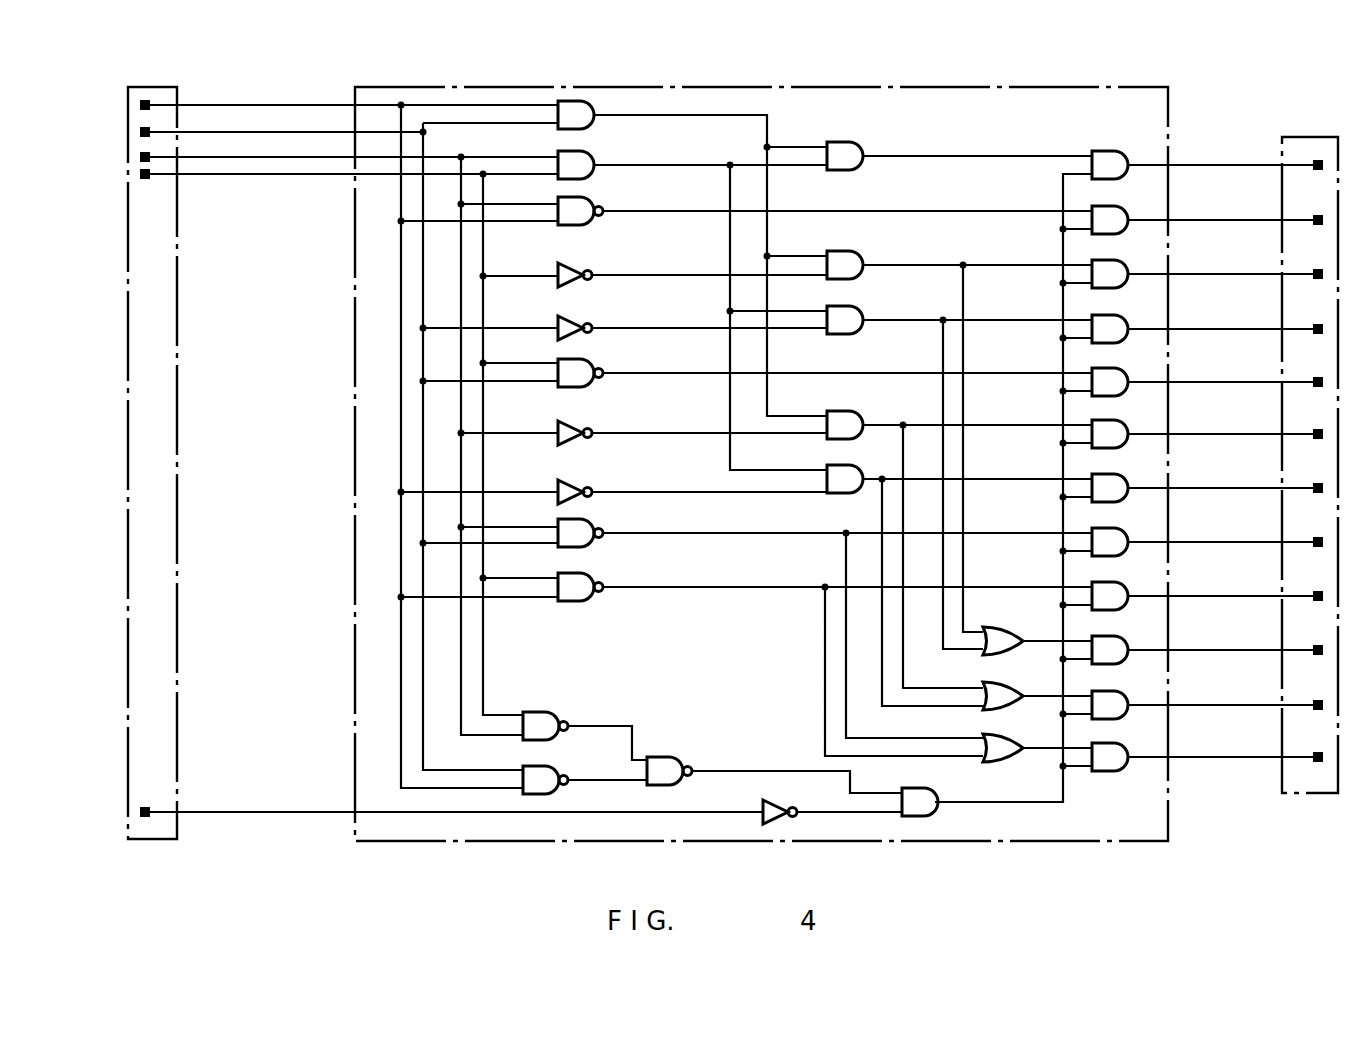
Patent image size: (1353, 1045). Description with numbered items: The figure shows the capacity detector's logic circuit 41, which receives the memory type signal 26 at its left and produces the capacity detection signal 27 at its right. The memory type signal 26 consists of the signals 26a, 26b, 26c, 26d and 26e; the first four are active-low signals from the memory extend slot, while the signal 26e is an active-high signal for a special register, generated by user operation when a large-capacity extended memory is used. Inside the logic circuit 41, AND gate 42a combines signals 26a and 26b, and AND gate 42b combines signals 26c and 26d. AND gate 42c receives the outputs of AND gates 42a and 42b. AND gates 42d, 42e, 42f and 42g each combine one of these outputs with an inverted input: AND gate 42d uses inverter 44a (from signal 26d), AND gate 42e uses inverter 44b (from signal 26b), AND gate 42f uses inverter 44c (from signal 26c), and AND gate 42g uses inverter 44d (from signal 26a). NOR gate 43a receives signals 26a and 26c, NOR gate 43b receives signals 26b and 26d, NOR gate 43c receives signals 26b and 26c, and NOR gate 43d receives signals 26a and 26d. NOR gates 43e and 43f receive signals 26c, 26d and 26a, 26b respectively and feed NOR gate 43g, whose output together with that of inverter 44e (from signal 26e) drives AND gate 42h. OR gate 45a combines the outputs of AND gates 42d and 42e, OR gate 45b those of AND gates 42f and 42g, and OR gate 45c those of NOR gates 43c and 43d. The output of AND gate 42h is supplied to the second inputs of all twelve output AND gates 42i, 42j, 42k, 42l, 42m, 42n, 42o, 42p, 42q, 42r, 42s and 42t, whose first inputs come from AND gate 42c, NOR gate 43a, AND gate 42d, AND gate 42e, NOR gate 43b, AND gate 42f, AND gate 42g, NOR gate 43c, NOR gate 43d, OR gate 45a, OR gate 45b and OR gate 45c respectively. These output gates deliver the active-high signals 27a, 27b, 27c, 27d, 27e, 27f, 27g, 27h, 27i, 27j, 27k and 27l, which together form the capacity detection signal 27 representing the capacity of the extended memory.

The memory type signal 26 is at (166, 840).
The signal 26a is at (140, 105).
The signal 26b is at (140, 132).
The signal 26c is at (140, 157).
The signal 26d is at (140, 174).
The signal 26e is at (140, 812).
The capacity detection signal 27 is at (1297, 795).
The signal 27a is at (1316, 159).
The signal 27b is at (1316, 214).
The signal 27c is at (1316, 268).
The signal 27d is at (1316, 323).
The signal 27e is at (1316, 376).
The signal 27f is at (1316, 428).
The signal 27g is at (1316, 482).
The signal 27h is at (1316, 536).
The signal 27i is at (1316, 590).
The signal 27j is at (1316, 644).
The signal 27k is at (1316, 699).
The signal 27l is at (1316, 751).
The logic circuit 41 is at (1096, 842).
The AND gate 42a is at (588, 106).
The AND gate 42b is at (588, 155).
The AND gate 42c is at (856, 146).
The AND gate 42d is at (856, 255).
The AND gate 42e is at (856, 310).
The AND gate 42f is at (856, 415).
The AND gate 42g is at (856, 469).
The AND gate 42h is at (932, 814).
The AND gate 42i is at (1127, 142).
The AND gate 42j is at (1127, 202).
The AND gate 42k is at (1127, 259).
The AND gate 42l is at (1127, 315).
The AND gate 42m is at (1127, 369).
The AND gate 42n is at (1127, 420).
The AND gate 42o is at (1127, 475).
The AND gate 42p is at (1127, 526).
The AND gate 42q is at (1127, 579).
The AND gate 42r is at (1127, 637).
The AND gate 42s is at (1127, 692).
The AND gate 42t is at (1127, 744).
The NOR gate 43a is at (588, 201).
The NOR gate 43b is at (588, 363).
The NOR gate 43c is at (588, 523).
The NOR gate 43d is at (588, 577).
The NOR gate 43e is at (553, 716).
The NOR gate 43f is at (553, 770).
The NOR gate 43g is at (670, 758).
The inverter 44a is at (575, 266).
The inverter 44b is at (575, 319).
The inverter 44c is at (575, 424).
The inverter 44d is at (575, 483).
The inverter 44e is at (776, 803).
The OR gate 45a is at (1013, 629).
The OR gate 45b is at (1013, 684).
The OR gate 45c is at (1013, 736).